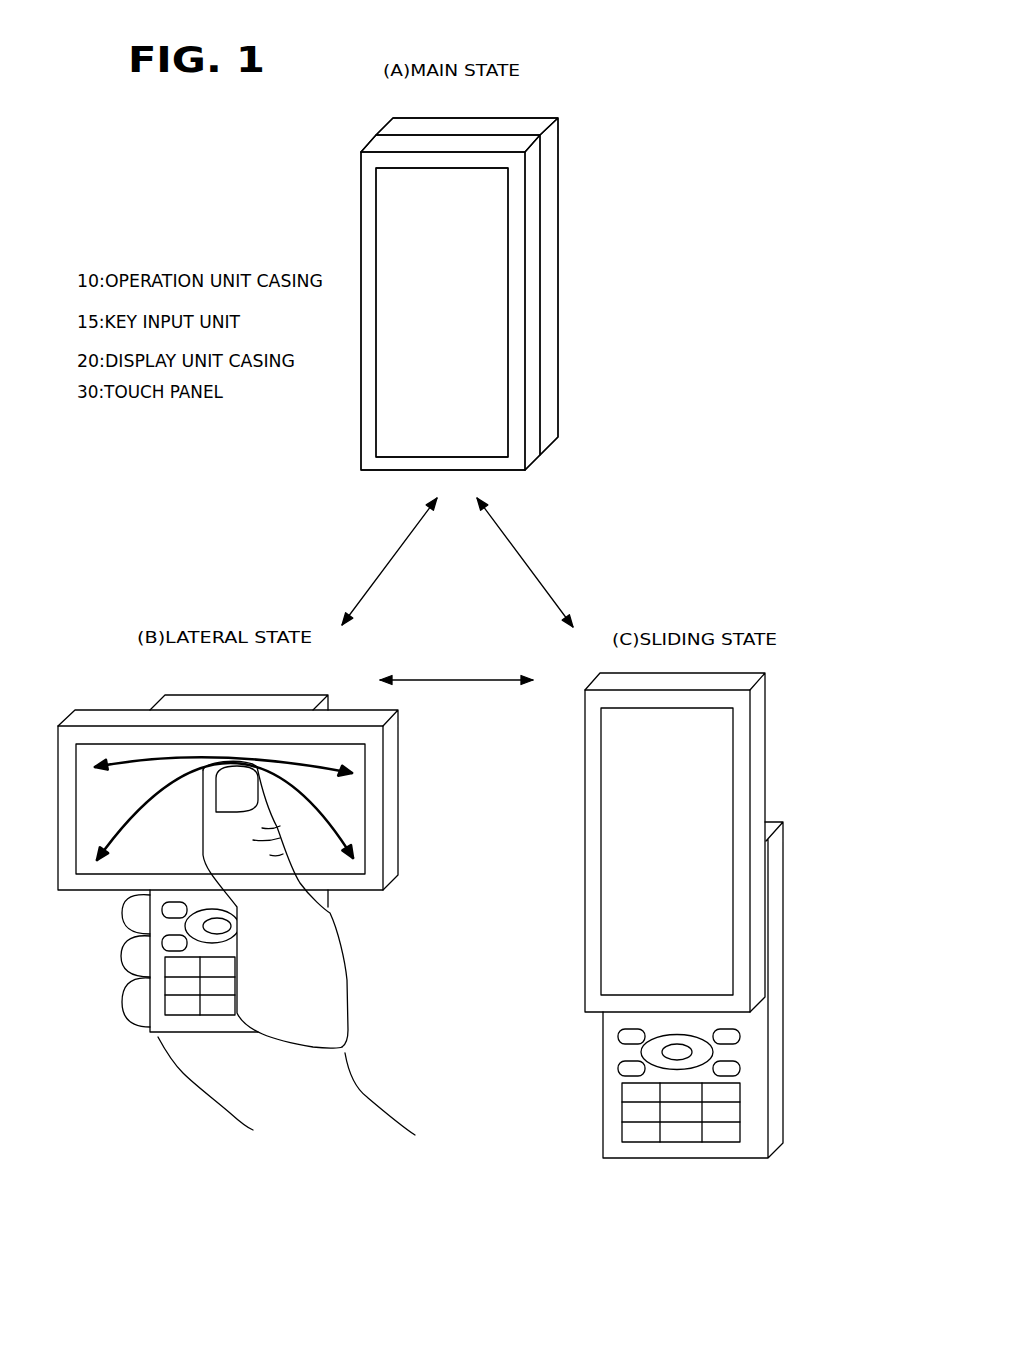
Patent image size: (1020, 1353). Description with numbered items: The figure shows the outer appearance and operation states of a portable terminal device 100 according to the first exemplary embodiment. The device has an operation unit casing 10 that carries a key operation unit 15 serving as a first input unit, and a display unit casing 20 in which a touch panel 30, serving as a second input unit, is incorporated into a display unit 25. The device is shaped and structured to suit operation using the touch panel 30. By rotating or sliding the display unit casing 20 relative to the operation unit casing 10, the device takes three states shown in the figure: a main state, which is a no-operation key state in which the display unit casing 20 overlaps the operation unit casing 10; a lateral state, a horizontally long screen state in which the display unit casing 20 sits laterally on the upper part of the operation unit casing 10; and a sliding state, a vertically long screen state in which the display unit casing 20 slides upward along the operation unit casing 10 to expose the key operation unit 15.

The portable terminal device 100 is at (576, 113).
The operation unit casing 10 is at (548, 348).
The key operation unit 15 is at (220, 1010).
The display unit casing 20 is at (532, 297).
The display unit 25 is at (509, 188).
The touch panel 30 is at (480, 243).